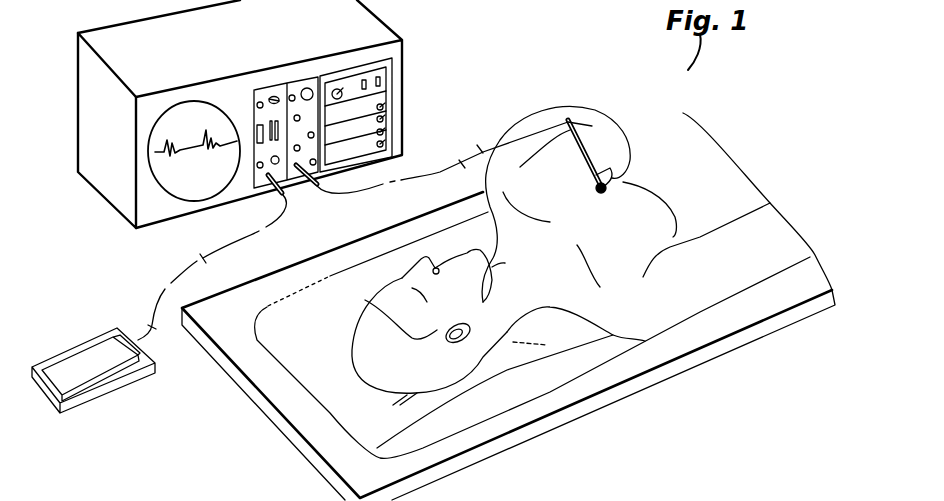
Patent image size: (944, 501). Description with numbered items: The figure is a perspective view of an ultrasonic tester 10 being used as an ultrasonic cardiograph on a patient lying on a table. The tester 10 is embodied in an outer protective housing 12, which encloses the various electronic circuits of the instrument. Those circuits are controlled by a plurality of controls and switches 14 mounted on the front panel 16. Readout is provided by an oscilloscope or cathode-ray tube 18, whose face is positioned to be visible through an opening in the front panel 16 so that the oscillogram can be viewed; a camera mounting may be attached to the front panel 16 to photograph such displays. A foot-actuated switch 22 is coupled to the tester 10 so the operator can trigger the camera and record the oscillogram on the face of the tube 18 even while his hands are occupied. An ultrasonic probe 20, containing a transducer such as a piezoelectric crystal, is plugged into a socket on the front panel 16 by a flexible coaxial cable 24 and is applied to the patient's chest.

The ultrasonic tester 10 is at (253, 115).
The outer protective housing 12 is at (105, 108).
The controls and switches 14 is at (310, 92).
The front panel 16 is at (229, 96).
The oscilloscope or cathode-ray tube 18 is at (173, 174).
The ultrasonic probe 20 is at (606, 194).
The foot-actuated switch 22 is at (138, 377).
The flexible coaxial cable 24 is at (477, 150).